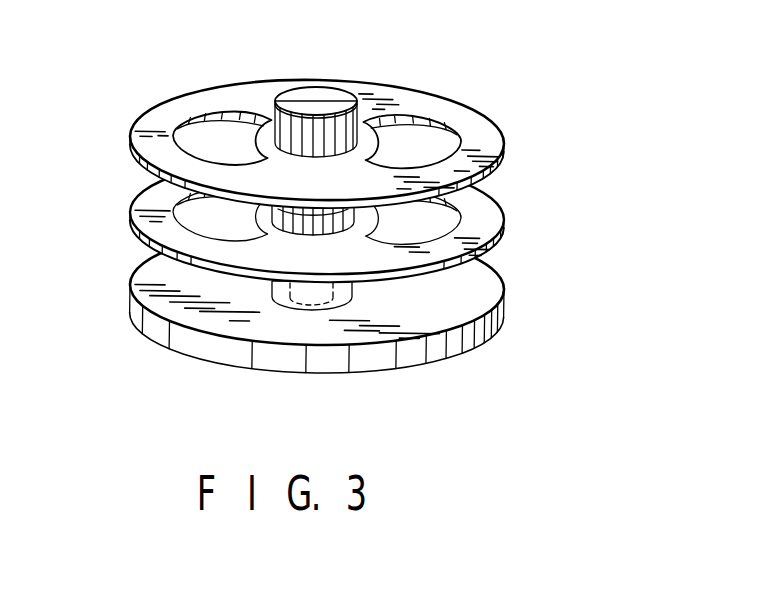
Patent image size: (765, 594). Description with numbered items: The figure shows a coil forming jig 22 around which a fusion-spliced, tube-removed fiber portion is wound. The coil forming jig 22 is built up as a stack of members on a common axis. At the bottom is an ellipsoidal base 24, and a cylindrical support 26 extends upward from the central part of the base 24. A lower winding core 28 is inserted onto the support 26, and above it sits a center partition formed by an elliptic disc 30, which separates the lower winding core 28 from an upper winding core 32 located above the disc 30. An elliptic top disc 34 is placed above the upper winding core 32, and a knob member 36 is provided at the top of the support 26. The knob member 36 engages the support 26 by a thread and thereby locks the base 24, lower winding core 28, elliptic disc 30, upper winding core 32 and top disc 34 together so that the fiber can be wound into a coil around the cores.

The coil forming jig 22 is at (360, 228).
The ellipsoidal base 24 is at (352, 321).
The cylindrical support 26 is at (330, 288).
The lower winding core 28 is at (304, 300).
The elliptic disc 30 is at (287, 220).
The upper winding core 32 is at (342, 213).
The elliptic top disc 34 is at (317, 125).
The knob member 36 is at (332, 96).